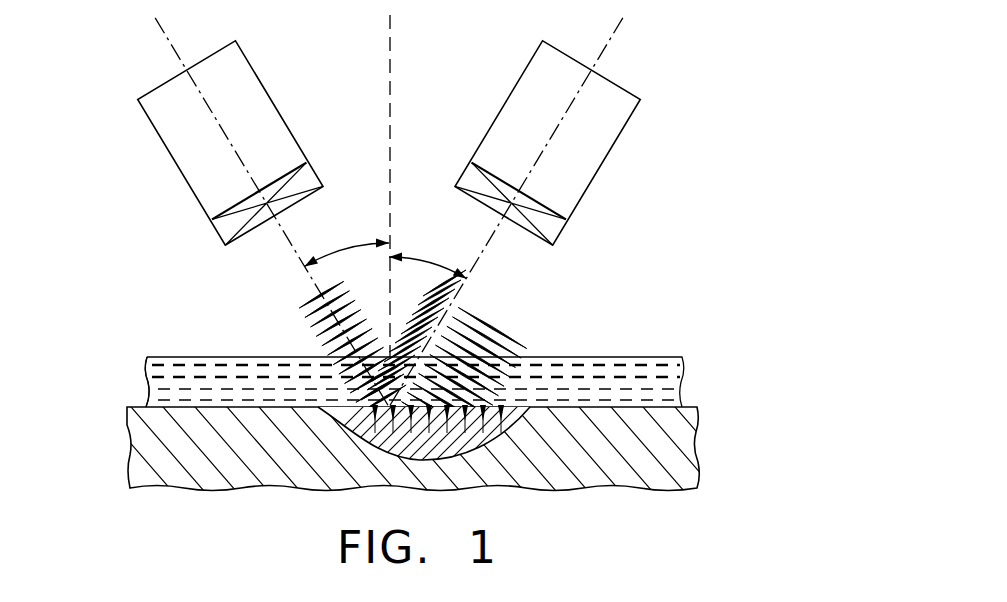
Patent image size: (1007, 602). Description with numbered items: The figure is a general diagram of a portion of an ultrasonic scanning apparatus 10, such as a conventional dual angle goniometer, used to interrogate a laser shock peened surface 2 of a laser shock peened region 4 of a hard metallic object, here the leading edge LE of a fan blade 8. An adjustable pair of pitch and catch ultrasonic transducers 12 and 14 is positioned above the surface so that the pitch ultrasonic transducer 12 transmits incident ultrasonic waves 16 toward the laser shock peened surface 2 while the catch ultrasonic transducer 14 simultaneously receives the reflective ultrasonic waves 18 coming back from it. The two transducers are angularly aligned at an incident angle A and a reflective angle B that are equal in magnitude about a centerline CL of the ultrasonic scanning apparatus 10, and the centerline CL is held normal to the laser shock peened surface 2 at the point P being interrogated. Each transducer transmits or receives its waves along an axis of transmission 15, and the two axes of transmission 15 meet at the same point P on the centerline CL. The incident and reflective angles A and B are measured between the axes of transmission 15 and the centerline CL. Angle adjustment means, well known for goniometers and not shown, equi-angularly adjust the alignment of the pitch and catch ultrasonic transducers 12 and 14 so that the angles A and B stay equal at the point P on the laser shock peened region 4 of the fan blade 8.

The laser shock peened surface 2 is at (520, 412).
The laser shock peened region 4 is at (463, 438).
The fan blade 8 is at (675, 422).
The ultrasonic scanning apparatus 10 is at (466, 56).
The pitch ultrasonic transducer 12 is at (273, 100).
The catch ultrasonic transducer 14 is at (623, 133).
The axes of transmission 15 is at (173, 49).
The incident ultrasonic waves 16 is at (302, 308).
The reflective ultrasonic waves 18 is at (517, 313).
The centerline CL is at (393, 80).
The leading edge LE is at (138, 408).
The incident angle A is at (352, 243).
The reflective angle B is at (423, 256).
The point P is at (372, 412).